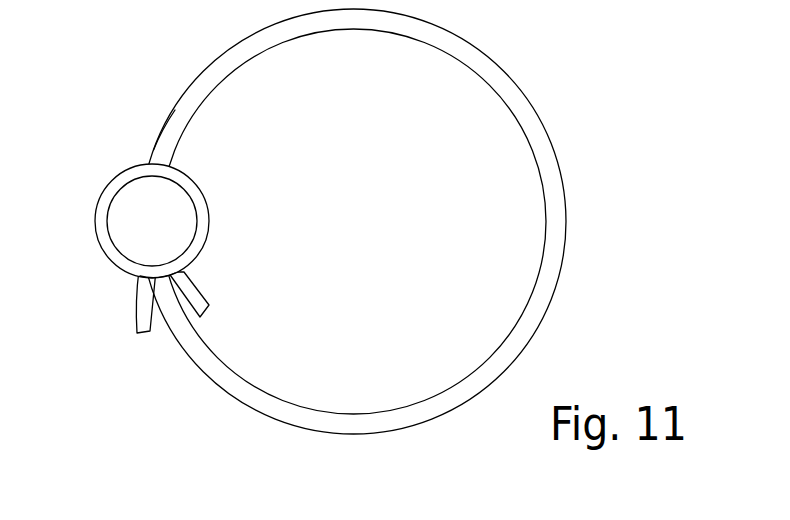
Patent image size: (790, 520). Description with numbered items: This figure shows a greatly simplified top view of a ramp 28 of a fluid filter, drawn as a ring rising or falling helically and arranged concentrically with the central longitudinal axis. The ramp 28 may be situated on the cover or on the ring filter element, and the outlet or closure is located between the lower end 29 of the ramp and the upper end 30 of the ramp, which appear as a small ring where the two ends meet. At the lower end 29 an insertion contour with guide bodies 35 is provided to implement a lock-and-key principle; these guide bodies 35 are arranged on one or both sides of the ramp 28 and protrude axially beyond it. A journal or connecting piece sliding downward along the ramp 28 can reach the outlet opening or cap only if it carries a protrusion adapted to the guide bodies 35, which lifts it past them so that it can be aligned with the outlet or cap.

The ramp 28 is at (525, 118).
The upper end of the ramp 30 is at (163, 153).
The lower end of the ramp 29 is at (165, 287).
The guide bodies 35 is at (145, 318).